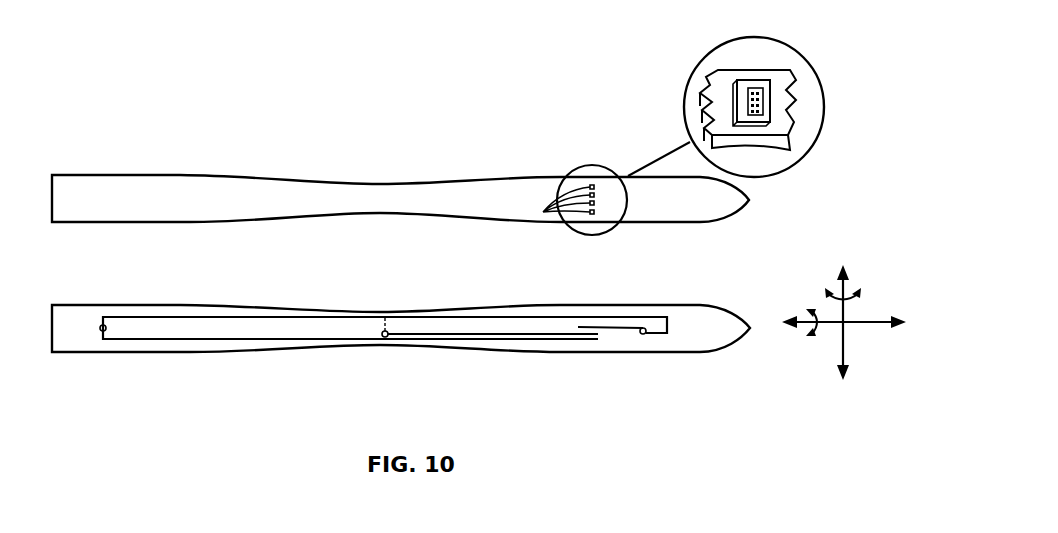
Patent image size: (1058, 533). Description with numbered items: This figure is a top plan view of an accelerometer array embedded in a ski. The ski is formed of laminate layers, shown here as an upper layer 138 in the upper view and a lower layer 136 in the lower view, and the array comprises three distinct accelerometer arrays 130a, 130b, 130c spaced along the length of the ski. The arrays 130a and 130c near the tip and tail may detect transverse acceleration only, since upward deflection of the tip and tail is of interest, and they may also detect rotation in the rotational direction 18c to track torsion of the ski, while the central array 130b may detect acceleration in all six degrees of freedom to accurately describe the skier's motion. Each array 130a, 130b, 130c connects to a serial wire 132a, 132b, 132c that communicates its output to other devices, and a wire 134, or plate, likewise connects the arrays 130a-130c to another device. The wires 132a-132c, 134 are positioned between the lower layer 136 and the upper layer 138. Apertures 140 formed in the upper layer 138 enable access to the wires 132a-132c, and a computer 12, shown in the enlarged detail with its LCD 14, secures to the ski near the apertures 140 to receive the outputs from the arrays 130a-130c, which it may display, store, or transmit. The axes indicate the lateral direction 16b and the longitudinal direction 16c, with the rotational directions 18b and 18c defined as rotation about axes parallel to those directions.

The computer 12 is at (755, 78).
The LCD 14 is at (765, 103).
The upper layer 138 is at (727, 200).
The apertures 140 is at (543, 212).
The array 130a is at (99, 328).
The array 130b is at (381, 333).
The array 130c is at (644, 334).
The wire 134 is at (178, 316).
The serial wire 132a is at (470, 340).
The serial wire 132b is at (568, 336).
The serial wire 132c is at (618, 334).
The lower layer 136 is at (712, 350).
The lateral direction 16b is at (850, 356).
The longitudinal direction 16c is at (878, 320).
The rotational direction 18b is at (824, 293).
The rotational direction 18c is at (812, 336).